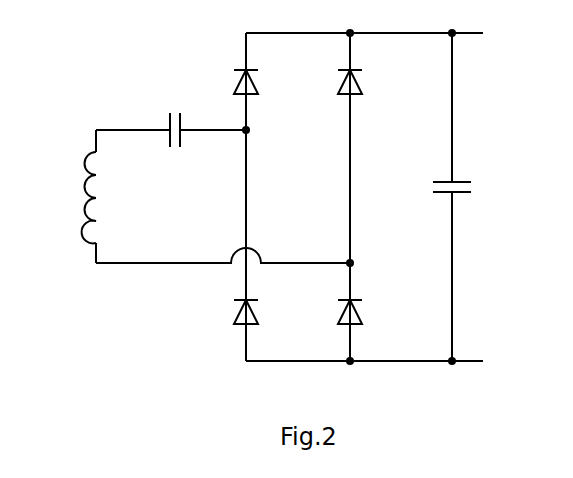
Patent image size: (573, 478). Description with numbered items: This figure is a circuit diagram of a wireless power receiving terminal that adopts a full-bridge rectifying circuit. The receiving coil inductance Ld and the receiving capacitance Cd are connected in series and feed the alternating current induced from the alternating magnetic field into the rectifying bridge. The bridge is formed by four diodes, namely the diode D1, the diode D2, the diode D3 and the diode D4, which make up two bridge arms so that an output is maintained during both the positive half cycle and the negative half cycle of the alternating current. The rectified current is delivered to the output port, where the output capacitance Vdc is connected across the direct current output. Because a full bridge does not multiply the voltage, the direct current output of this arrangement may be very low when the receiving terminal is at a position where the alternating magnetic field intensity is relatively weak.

The diode D1 is at (267, 82).
The diode D2 is at (371, 82).
The diode D3 is at (267, 312).
The diode D4 is at (371, 312).
The receiving capacitance Cd is at (172, 114).
The receiving coil inductance Ld is at (67, 197).
The output capacitance Vdc is at (480, 189).